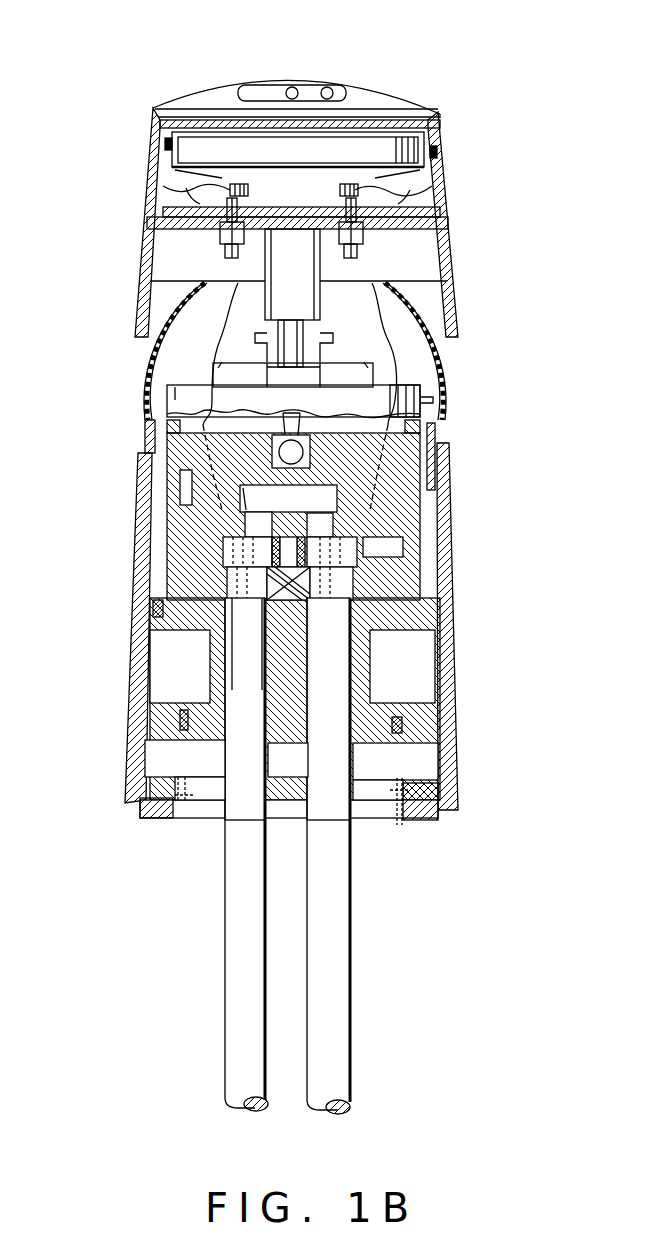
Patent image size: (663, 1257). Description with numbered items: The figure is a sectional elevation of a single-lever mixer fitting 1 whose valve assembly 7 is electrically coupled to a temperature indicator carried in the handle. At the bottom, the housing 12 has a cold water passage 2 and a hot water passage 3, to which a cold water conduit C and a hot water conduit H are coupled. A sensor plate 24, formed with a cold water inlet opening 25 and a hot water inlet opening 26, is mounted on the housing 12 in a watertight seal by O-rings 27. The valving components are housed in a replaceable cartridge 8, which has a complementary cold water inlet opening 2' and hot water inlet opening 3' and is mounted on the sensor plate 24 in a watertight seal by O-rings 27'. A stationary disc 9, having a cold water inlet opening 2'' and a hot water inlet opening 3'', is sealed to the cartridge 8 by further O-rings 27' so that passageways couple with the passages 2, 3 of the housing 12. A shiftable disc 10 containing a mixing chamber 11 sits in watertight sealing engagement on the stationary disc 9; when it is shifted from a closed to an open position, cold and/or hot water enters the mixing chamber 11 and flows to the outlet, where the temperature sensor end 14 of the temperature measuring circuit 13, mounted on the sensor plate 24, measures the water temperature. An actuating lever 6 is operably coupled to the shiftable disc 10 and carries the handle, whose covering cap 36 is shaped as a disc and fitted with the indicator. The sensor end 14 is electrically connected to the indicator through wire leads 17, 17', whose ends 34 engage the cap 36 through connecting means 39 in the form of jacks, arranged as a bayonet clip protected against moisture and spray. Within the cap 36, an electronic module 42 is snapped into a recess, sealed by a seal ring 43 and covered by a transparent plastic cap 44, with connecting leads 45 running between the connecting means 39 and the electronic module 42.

The single-lever mixer fitting 1 is at (517, 387).
The cold water passage 2 is at (360, 854).
The cold water inlet opening of cartridge 2' is at (396, 542).
The cold water inlet opening of stationary disc 2'' is at (289, 524).
The hot water passage 3 is at (217, 853).
The hot water inlet opening of cartridge 3' is at (182, 552).
The hot water inlet opening of stationary disc 3'' is at (257, 499).
The actuating lever 6 is at (300, 343).
The valve assembly 7 is at (410, 374).
The replaceable cartridge 8 is at (427, 403).
The stationary disc 9 is at (182, 517).
The shiftable disc 10 is at (210, 453).
The mixing chamber 11 is at (329, 509).
The housing 12 is at (376, 743).
The temperature measuring circuit 13 is at (410, 196).
The temperature sensor end 14 is at (247, 644).
The wire lead 17 is at (329, 214).
The wire lead 17' is at (245, 396).
The sensor plate 24 is at (413, 593).
The cold water inlet opening of sensor plate 25 is at (347, 580).
The hot water inlet opening of sensor plate 26 is at (227, 580).
The O-rings 27 is at (292, 666).
The O-rings 27' is at (299, 543).
The wire lead end 34 is at (220, 236).
The covering cap 36 is at (133, 162).
The connecting means 39 is at (222, 255).
The electronic module 42 is at (430, 138).
The seal ring 43 is at (157, 143).
The transparent plastic cap 44 is at (395, 90).
The connecting leads 45 is at (150, 188).
The hot water conduit H is at (238, 1068).
The cold water conduit C is at (336, 1068).